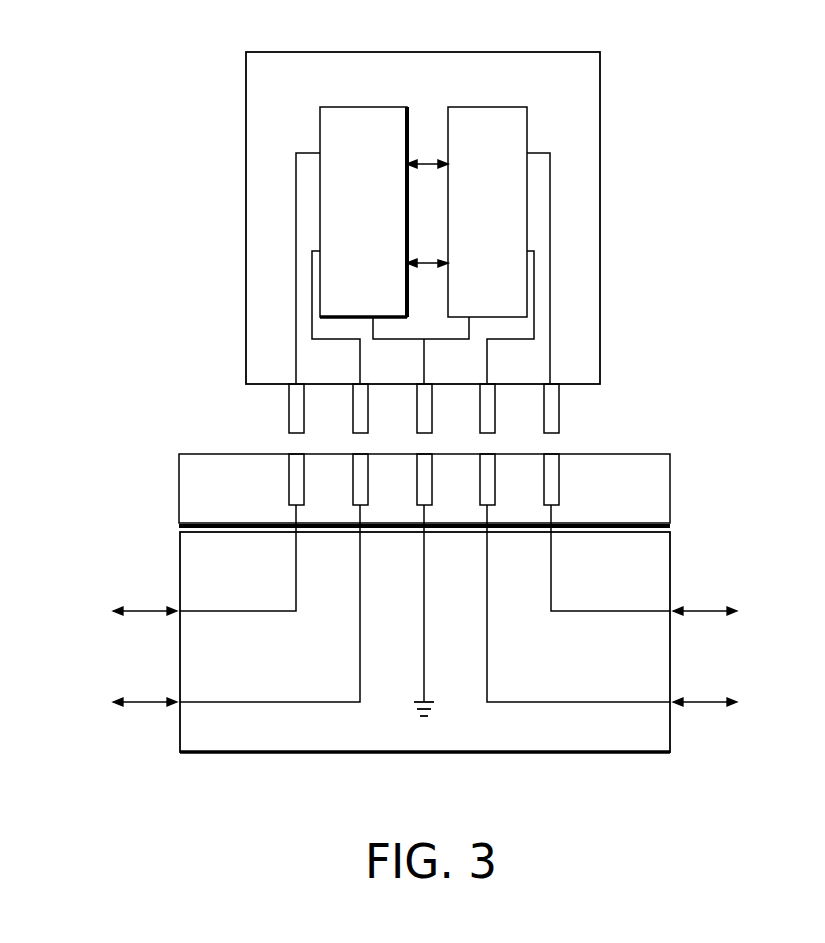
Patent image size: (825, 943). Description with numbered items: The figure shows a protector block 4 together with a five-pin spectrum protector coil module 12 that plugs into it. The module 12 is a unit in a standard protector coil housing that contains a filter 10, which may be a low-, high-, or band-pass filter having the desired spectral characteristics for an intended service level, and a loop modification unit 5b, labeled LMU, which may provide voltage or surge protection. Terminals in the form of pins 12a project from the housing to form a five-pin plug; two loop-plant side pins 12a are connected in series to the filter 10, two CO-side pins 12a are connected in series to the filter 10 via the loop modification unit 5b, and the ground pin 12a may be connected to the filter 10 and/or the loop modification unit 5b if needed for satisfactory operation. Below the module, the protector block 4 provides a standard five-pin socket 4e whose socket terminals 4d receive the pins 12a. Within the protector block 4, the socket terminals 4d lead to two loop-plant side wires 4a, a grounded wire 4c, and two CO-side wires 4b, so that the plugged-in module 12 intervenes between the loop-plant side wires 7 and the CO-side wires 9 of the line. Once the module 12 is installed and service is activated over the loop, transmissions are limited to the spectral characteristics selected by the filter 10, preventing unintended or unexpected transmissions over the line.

The protector block 4 is at (653, 567).
The loop-plant side wires 4a is at (225, 664).
The CO-side wires 4b is at (589, 664).
The grounded wire 4c is at (442, 664).
The socket terminals 4d is at (296, 485).
The socket 4e is at (652, 487).
The loop modification unit 5b is at (498, 118).
The loop-plant side wires 7 is at (137, 656).
The CO-side wires 9 is at (724, 654).
The filter 10 is at (367, 118).
The spectrum protector coil module 12 is at (583, 108).
The pins 12a is at (560, 412).